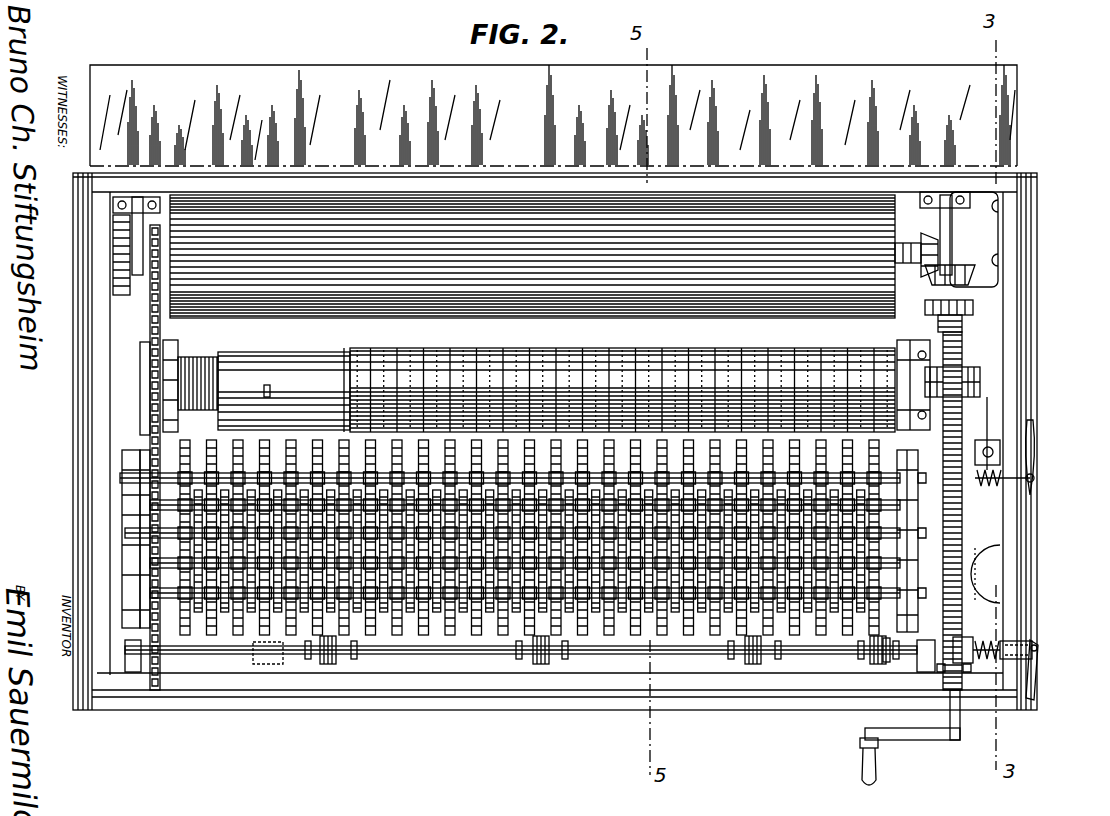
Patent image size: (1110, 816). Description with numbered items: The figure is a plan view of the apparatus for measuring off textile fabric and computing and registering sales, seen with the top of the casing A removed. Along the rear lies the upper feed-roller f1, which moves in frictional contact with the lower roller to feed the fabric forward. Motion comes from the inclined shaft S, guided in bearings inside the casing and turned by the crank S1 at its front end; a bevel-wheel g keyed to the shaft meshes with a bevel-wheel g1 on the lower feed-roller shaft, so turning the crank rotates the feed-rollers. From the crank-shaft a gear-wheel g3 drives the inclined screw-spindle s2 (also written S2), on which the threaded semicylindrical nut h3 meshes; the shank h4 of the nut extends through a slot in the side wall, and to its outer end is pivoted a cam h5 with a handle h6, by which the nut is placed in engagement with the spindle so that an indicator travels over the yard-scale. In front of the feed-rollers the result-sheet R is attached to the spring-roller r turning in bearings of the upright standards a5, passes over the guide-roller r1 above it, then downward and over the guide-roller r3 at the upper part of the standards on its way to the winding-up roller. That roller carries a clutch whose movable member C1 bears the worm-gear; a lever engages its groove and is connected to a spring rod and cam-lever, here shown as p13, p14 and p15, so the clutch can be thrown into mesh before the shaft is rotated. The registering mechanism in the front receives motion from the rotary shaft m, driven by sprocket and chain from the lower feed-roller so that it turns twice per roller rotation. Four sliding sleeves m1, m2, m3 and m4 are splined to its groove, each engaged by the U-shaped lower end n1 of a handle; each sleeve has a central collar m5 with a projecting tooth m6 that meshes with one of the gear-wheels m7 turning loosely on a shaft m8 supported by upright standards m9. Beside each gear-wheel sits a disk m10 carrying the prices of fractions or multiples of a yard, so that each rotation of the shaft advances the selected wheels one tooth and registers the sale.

The casing A is at (537, 403).
The upper feed-roller f1 is at (532, 256).
The bevel-wheel g is at (959, 239).
The bevel-wheel g1 is at (925, 243).
The gear-wheel g3 is at (973, 322).
The screw-spindle s2 is at (964, 347).
The movable clutch member C1 is at (980, 381).
The lever p13 is at (981, 438).
The spring p14 is at (1036, 480).
The lever arm p15 is at (1035, 440).
The result-sheet R is at (619, 390).
The guide-roller r3 is at (345, 338).
The upright standards a5 is at (170, 348).
The roller r is at (529, 533).
The guide-roller r1 is at (203, 447).
The shaft m8 is at (118, 478).
The upright standards m9 is at (125, 531).
The rotary shaft m is at (521, 667).
The sliding sleeve m1 is at (322, 660).
The sliding sleeve m2 is at (525, 645).
The sliding sleeve m3 is at (748, 660).
The sliding sleeve m4 is at (868, 636).
The central collar m5 is at (327, 662).
The projecting tooth m6 is at (320, 638).
The gear-wheels m7 is at (874, 645).
The disk m10 is at (185, 636).
The U-shaped lower end n1 is at (602, 658).
The nut h3 is at (963, 648).
The shank h4 is at (985, 648).
The cam h5 is at (1040, 645).
The handle h6 is at (1040, 686).
The shaft S is at (962, 725).
The crank S1 is at (886, 761).
The screw-spindle S2 is at (955, 590).